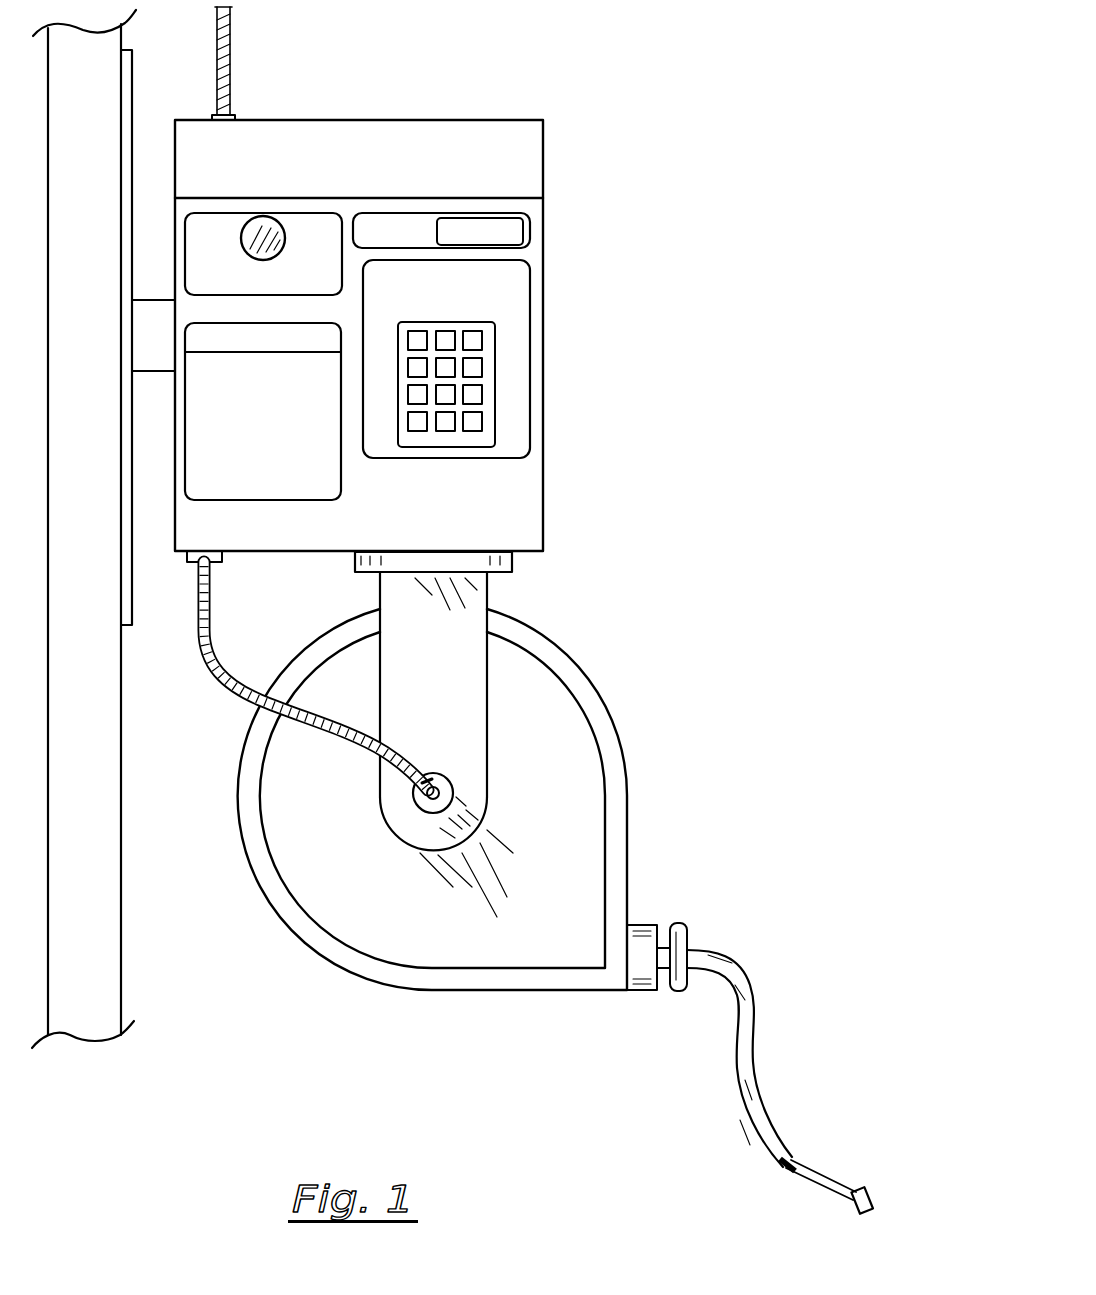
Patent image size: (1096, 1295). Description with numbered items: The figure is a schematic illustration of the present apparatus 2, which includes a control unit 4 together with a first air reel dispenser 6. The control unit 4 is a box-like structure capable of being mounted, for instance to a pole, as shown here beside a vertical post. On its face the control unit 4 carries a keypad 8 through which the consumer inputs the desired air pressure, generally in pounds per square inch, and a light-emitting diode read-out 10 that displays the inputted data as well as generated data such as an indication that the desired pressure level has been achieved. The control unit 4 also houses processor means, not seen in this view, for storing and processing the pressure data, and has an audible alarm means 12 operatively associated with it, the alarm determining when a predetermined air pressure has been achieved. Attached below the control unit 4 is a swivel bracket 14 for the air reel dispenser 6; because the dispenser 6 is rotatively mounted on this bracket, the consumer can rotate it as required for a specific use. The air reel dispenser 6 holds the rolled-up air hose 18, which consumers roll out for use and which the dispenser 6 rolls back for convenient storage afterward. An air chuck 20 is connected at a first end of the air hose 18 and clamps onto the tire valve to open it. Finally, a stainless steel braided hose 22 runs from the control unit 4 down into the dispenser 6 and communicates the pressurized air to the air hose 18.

The apparatus 2 is at (668, 100).
The control unit 4 is at (418, 524).
The air reel dispenser 6 is at (364, 899).
The keypad 8 is at (483, 380).
The light-emitting diode read-out 10 is at (517, 226).
The audible alarm means 12 is at (287, 226).
The swivel bracket 14 is at (513, 573).
The air hose 18 is at (745, 1048).
The air chuck 20 is at (860, 1188).
The stainless steel braided hose 22 is at (220, 657).